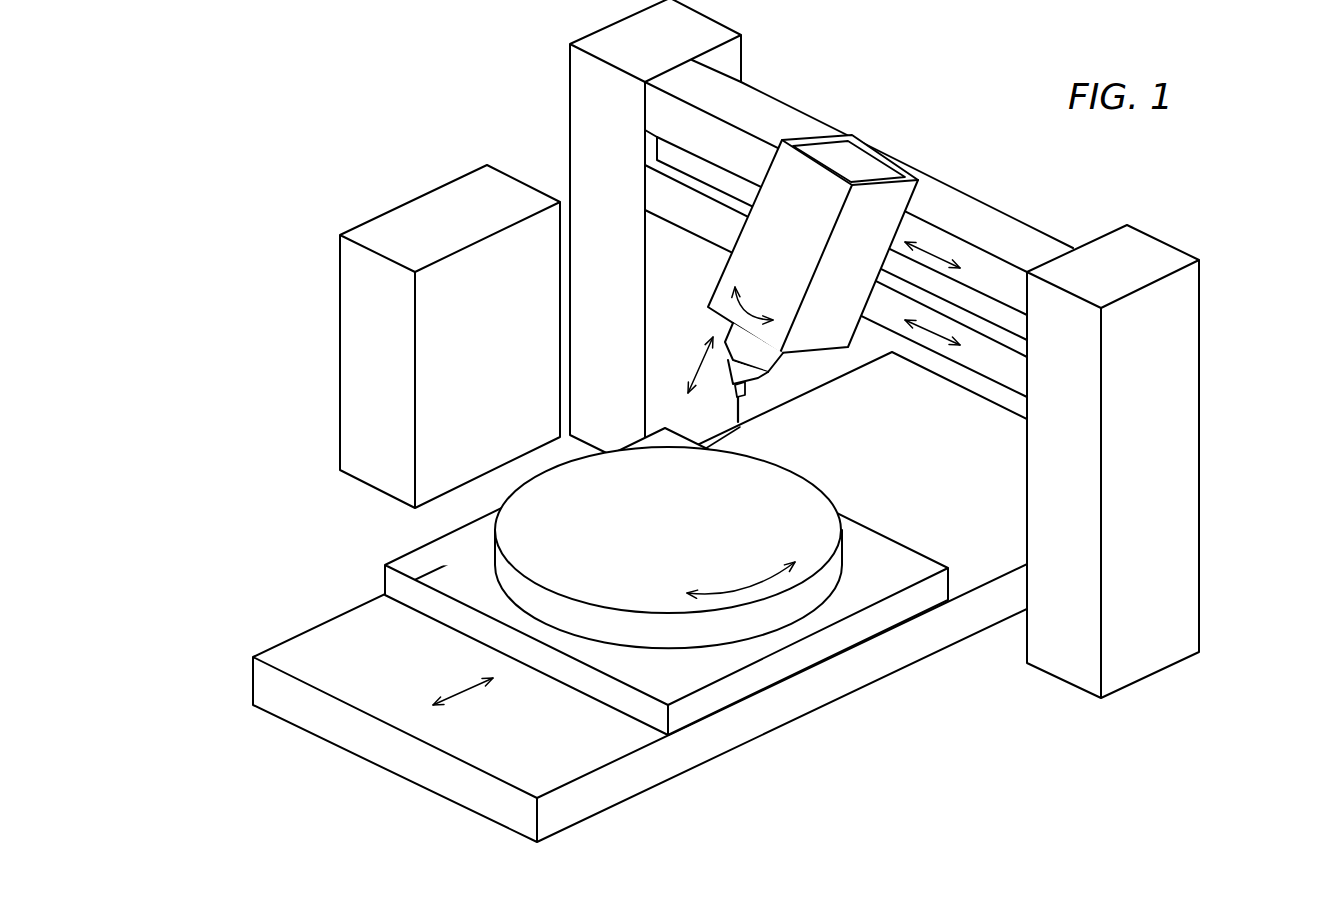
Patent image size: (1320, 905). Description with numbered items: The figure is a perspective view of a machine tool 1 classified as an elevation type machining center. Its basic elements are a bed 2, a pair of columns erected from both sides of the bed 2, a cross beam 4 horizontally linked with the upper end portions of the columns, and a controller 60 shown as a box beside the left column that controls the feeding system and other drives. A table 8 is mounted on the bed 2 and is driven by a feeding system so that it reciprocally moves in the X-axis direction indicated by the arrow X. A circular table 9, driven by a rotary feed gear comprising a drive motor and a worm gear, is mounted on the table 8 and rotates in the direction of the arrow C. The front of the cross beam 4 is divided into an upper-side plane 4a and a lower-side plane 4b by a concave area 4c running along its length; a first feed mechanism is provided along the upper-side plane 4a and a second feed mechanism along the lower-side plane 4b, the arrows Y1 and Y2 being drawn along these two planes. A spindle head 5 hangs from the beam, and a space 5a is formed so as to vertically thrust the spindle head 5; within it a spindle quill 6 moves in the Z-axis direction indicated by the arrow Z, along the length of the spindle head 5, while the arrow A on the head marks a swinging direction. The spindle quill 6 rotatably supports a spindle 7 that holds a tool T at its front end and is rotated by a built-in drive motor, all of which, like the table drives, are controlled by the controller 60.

The machine tool 1 is at (288, 230).
The bed 2 is at (320, 632).
The cross beam 4 is at (800, 219).
The upper-side plane 4a is at (695, 124).
The lower-side plane 4b is at (690, 215).
The concave area 4c is at (668, 152).
The spindle head 5 is at (851, 210).
The space 5a is at (905, 160).
The spindle quill 6 is at (782, 357).
The spindle 7 is at (755, 378).
The tool T is at (743, 398).
The table 8 is at (775, 680).
The circular table 9 is at (828, 510).
The controller 60 is at (348, 410).
The X-axis direction arrow X is at (463, 702).
The Y1 direction arrow Y1 is at (950, 264).
The Y2 direction arrow Y2 is at (950, 344).
The Z-axis direction arrow Z is at (695, 365).
The A direction arrow A is at (752, 304).
The C direction arrow C is at (741, 578).